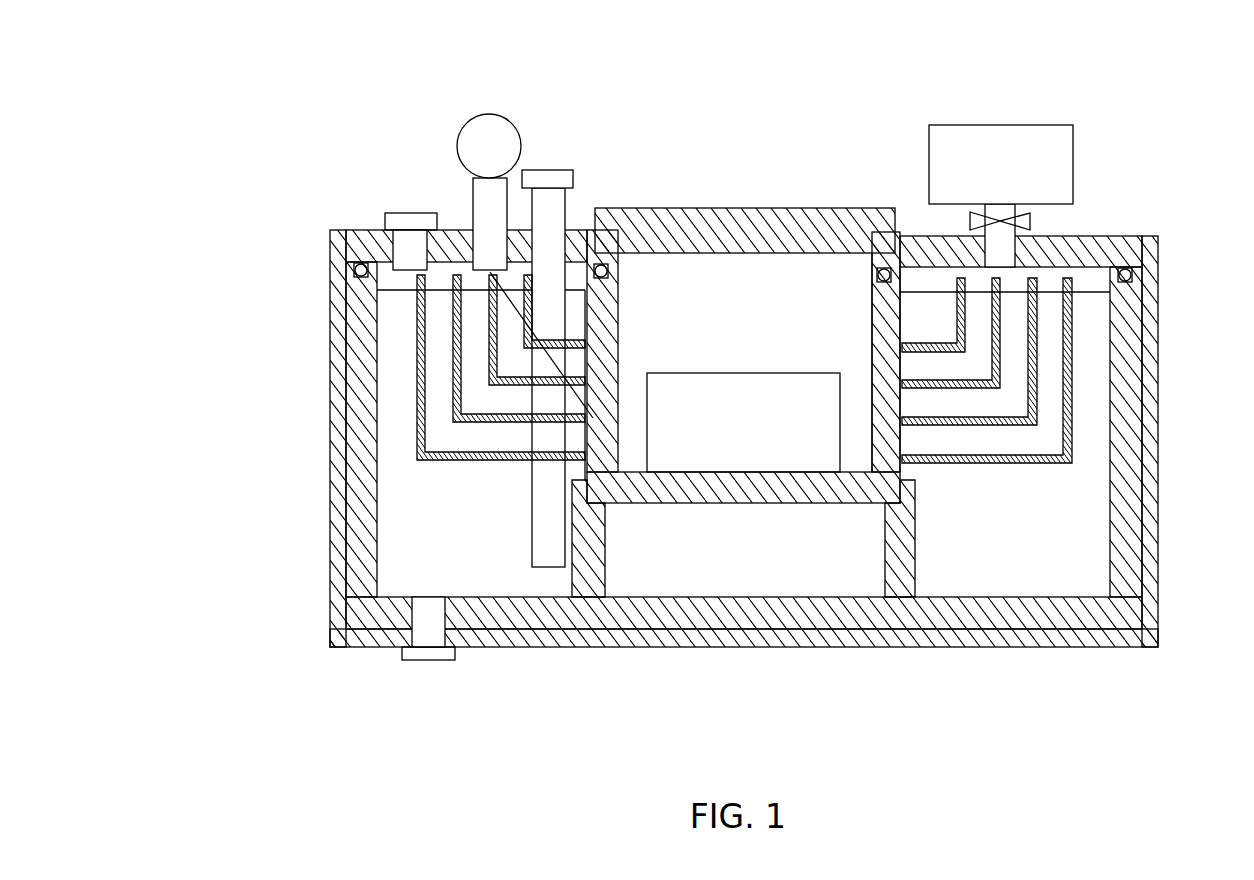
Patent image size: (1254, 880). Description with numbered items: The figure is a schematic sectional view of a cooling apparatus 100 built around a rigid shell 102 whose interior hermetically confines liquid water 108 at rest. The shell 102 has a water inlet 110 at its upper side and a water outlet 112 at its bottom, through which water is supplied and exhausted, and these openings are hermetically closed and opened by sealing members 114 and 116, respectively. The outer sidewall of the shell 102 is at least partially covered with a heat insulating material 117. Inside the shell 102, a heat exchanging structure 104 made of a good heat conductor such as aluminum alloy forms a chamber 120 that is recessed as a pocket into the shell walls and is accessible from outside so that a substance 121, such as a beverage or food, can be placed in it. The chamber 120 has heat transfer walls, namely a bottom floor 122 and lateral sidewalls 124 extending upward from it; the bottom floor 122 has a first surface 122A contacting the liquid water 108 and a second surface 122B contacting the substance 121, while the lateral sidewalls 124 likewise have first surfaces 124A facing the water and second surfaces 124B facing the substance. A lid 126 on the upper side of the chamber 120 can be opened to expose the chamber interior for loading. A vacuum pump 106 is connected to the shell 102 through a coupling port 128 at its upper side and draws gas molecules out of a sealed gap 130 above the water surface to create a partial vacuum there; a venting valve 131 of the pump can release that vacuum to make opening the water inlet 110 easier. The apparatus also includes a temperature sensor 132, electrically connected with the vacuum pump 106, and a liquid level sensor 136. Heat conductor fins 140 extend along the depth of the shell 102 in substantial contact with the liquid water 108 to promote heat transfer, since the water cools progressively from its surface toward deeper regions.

The cooling apparatus 100 is at (141, 56).
The shell 102 is at (1133, 337).
The heat exchanging structure 104 is at (743, 438).
The vacuum pump 106 is at (983, 175).
The liquid water 108 is at (1100, 557).
The water inlet 110 is at (383, 252).
The water outlet 112 is at (410, 612).
The sealing member 114 is at (412, 222).
The sealing member 116 is at (432, 652).
The heat insulating material 117 is at (335, 463).
The chamber 120 is at (717, 319).
The substance 121 is at (725, 427).
The bottom floor 122 is at (746, 497).
The first surface of bottom floor 122A is at (833, 507).
The second surface of bottom floor 122B is at (618, 468).
The lateral sidewalls 124 is at (927, 305).
The first surfaces of lateral sidewalls 124A is at (905, 315).
The second surfaces of lateral sidewalls 124B is at (863, 318).
The lid 126 is at (747, 215).
The coupling port 128 is at (1018, 257).
The sealed gap 130 is at (1097, 280).
The venting valve 131 is at (968, 220).
The temperature sensor 132 is at (497, 118).
The liquid level sensor 136 is at (551, 172).
The heat conductor fins 140 is at (488, 323).